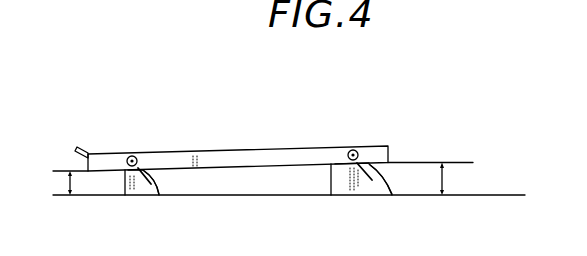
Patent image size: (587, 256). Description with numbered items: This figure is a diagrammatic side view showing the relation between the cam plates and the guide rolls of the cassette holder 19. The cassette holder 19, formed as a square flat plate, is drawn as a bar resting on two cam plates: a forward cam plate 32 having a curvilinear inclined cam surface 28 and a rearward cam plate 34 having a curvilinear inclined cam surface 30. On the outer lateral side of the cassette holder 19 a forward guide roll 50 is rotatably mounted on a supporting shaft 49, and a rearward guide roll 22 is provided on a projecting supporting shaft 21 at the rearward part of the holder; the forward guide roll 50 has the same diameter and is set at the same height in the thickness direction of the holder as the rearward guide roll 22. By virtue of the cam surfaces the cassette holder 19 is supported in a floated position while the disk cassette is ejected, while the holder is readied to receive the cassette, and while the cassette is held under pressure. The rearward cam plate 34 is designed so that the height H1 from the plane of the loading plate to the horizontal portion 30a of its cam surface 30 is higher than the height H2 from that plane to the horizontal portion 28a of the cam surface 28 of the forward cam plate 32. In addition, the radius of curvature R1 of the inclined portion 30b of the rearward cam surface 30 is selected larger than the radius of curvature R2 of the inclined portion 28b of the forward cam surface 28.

The cassette holder 19 is at (231, 152).
The supporting shaft 21 is at (355, 150).
The guide roll 22 is at (348, 152).
The inclined cam surface 28 is at (147, 171).
The horizontal portion 28a is at (143, 167).
The inclined portion 28b is at (158, 178).
The inclined cam surface 30 is at (383, 146).
The horizontal portion 30a is at (342, 157).
The inclined portion 30b is at (392, 180).
The cam plate 32 is at (125, 185).
The cam plate 34 is at (342, 187).
The supporting shaft 49 is at (132, 155).
The guide roll 50 is at (123, 158).
The radius of curvature R1 is at (375, 178).
The radius of curvature R2 is at (144, 181).
The height H1 is at (454, 179).
The height H2 is at (55, 182).